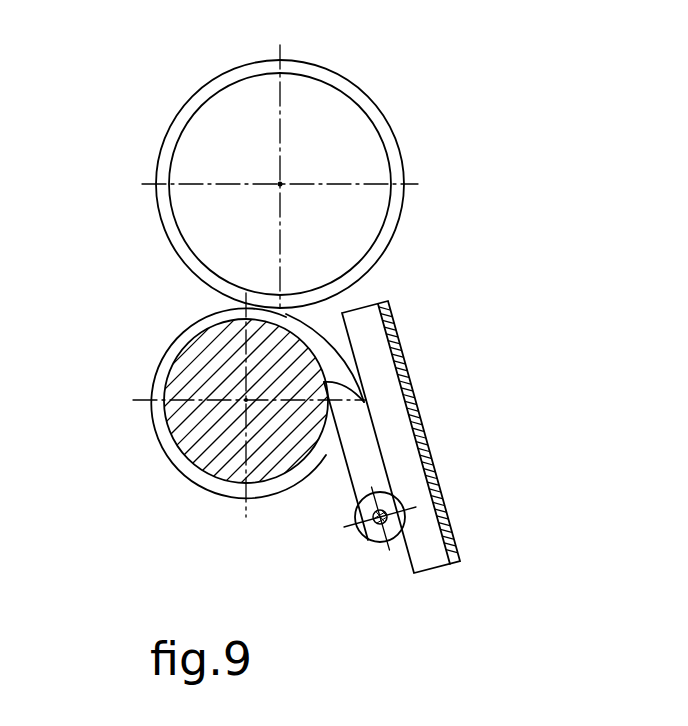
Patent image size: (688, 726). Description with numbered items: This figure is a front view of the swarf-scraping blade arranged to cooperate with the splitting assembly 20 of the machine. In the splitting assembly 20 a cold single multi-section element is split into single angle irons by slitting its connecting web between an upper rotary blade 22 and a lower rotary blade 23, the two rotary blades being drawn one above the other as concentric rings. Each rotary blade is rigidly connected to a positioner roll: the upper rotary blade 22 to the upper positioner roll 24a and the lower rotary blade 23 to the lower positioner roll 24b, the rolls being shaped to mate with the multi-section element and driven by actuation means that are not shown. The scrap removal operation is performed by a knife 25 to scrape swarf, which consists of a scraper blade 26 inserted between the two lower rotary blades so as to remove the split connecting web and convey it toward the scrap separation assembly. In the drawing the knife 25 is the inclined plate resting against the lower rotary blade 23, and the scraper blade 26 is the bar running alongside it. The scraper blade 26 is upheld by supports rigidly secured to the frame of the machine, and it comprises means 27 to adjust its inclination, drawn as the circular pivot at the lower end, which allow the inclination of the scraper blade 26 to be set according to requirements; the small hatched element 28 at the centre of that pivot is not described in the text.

The splitting assembly 20 is at (412, 132).
The upper rotary blade 22 is at (175, 232).
The lower rotary blade 23 is at (175, 353).
The upper positioner roll 24a is at (280, 184).
The lower positioner roll 24b is at (246, 400).
The knife to scrape swarf 25 is at (407, 347).
The scraper blade 26 is at (363, 445).
The means to adjust inclination 27 is at (367, 537).
The pivot pin 28 is at (355, 512).